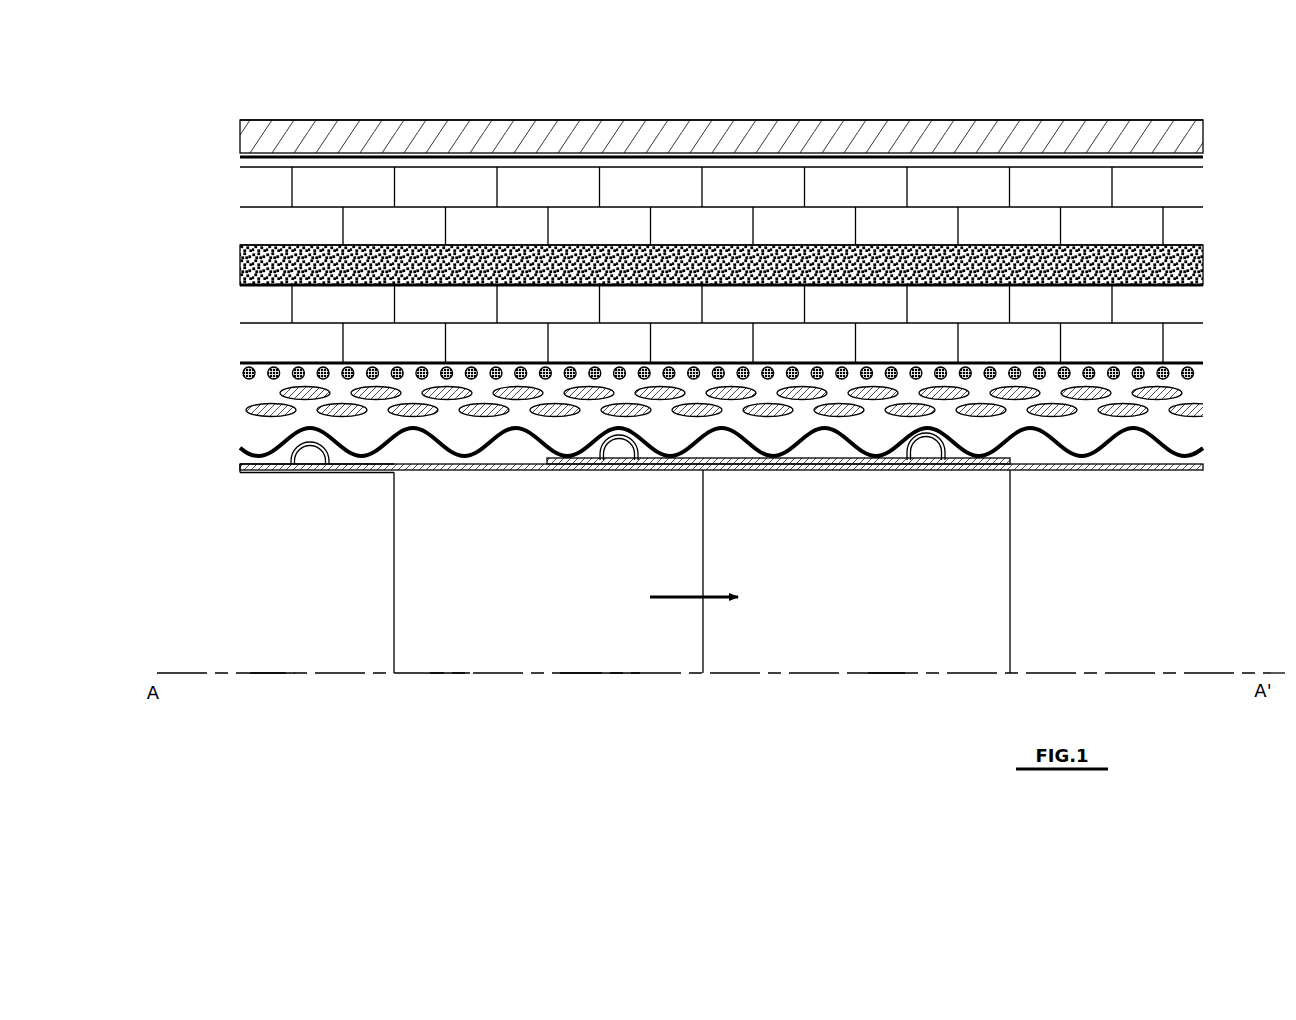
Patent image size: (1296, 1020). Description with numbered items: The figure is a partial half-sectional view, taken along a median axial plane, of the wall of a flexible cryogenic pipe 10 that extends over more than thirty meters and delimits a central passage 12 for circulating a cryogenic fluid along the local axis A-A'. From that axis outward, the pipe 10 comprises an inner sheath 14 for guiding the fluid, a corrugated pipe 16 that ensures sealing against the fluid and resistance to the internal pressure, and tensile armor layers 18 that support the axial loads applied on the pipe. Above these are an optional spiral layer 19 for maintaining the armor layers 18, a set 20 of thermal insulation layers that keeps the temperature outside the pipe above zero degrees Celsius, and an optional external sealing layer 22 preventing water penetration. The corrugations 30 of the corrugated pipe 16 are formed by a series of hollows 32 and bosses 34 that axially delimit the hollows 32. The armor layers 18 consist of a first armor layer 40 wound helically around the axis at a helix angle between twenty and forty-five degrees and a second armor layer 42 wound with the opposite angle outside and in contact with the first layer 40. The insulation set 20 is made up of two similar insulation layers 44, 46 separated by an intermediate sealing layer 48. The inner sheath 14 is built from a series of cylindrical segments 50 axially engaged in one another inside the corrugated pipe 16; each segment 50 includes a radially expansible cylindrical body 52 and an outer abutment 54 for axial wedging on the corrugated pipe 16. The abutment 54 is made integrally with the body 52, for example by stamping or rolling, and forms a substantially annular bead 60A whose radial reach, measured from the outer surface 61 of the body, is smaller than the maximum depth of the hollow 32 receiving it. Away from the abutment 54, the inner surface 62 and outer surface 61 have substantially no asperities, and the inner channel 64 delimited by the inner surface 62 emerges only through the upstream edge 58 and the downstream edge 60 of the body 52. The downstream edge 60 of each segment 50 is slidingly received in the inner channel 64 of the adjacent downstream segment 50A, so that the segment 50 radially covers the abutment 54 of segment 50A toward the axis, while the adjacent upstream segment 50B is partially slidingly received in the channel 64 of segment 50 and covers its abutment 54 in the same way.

The cryogenic pipe 10 is at (480, 116).
The central passage 12 is at (485, 715).
The inner sheath 14 is at (210, 476).
The corrugated pipe 16 is at (253, 440).
The tensile armor layers 18 is at (664, 405).
The spiral layer 19 is at (236, 372).
The set of thermal insulation layers 20 is at (236, 255).
The external sealing layer 22 is at (236, 141).
The corrugations 30 is at (462, 466).
The hollow 32 is at (412, 430).
The boss 34 is at (481, 453).
The first armor layer 40 is at (253, 412).
The second armor layer 42 is at (306, 399).
The insulation layer 44 is at (243, 185).
The insulation layer 46 is at (248, 305).
The intermediate sealing layer 48 is at (248, 272).
The cylindrical segment 50 is at (620, 684).
The downstream segment 50A is at (885, 684).
The upstream segment 50B is at (273, 684).
The cylindrical body 52 is at (576, 643).
The outer abutment 54 is at (281, 453).
The upstream edge 58 is at (240, 467).
The downstream edge 60 is at (703, 525).
The annular bead 60A is at (320, 461).
The outer surface 61 is at (522, 462).
The inner surface 62 is at (680, 490).
The inner channel 64 is at (447, 638).